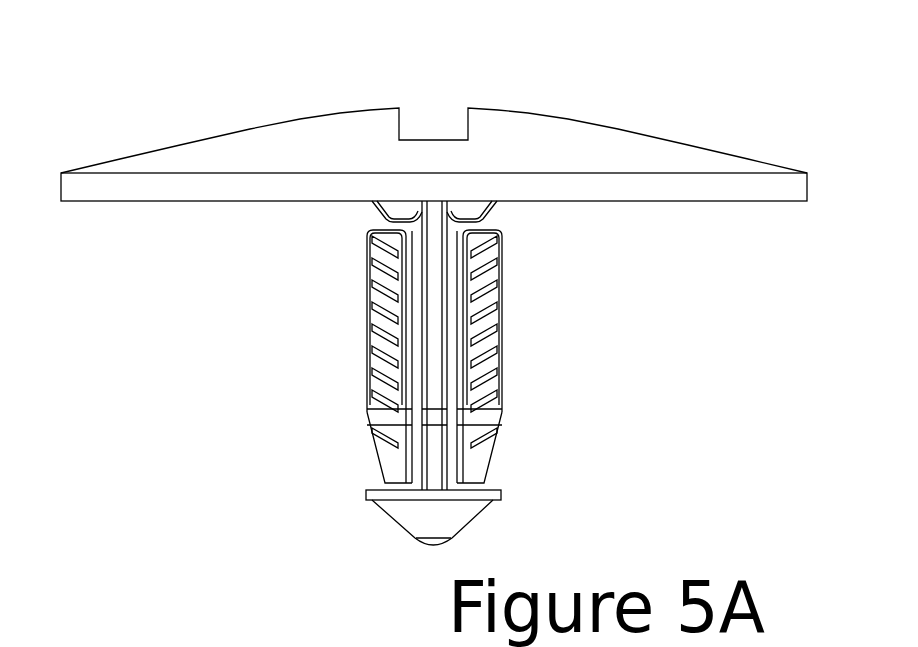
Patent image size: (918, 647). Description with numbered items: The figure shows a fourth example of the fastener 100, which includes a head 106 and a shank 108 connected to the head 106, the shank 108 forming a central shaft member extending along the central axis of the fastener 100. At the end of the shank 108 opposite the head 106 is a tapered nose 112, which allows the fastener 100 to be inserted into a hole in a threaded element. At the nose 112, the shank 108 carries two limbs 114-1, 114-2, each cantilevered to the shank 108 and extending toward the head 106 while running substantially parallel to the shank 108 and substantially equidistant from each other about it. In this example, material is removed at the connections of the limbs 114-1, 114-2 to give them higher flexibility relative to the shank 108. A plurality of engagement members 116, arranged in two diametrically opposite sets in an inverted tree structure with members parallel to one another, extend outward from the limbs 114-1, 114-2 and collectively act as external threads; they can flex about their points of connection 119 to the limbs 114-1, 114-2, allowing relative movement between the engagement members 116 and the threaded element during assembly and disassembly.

The fastener 100 is at (590, 105).
The head 106 is at (260, 150).
The shank 108 is at (433, 266).
The nose 112 is at (410, 552).
The limb 114-1 is at (382, 465).
The limb 114-2 is at (488, 455).
The engagement members 116 is at (378, 267).
The points of connection 119 is at (398, 392).